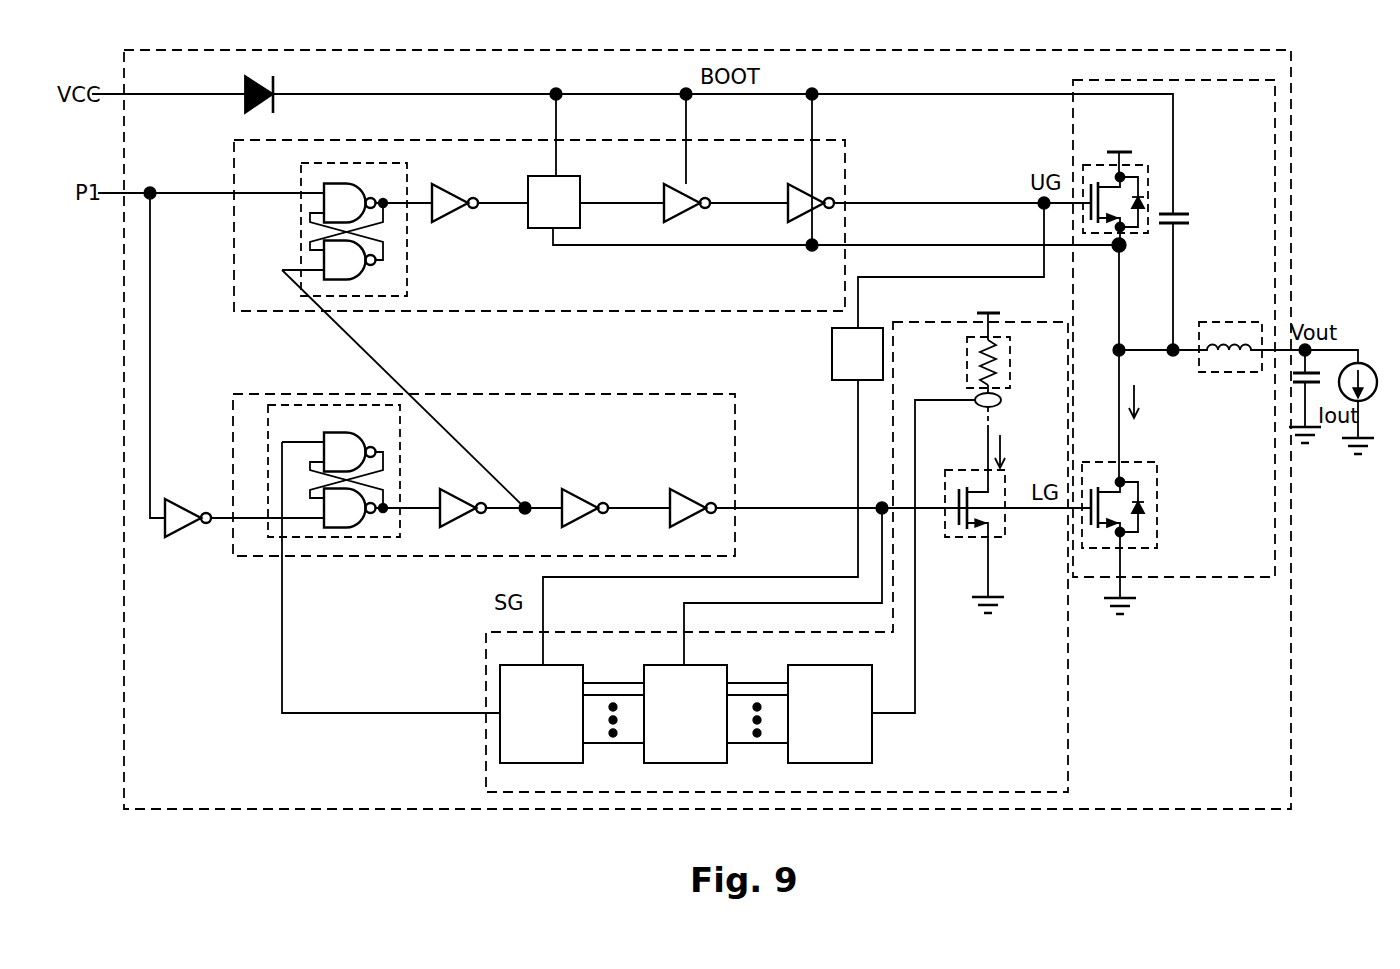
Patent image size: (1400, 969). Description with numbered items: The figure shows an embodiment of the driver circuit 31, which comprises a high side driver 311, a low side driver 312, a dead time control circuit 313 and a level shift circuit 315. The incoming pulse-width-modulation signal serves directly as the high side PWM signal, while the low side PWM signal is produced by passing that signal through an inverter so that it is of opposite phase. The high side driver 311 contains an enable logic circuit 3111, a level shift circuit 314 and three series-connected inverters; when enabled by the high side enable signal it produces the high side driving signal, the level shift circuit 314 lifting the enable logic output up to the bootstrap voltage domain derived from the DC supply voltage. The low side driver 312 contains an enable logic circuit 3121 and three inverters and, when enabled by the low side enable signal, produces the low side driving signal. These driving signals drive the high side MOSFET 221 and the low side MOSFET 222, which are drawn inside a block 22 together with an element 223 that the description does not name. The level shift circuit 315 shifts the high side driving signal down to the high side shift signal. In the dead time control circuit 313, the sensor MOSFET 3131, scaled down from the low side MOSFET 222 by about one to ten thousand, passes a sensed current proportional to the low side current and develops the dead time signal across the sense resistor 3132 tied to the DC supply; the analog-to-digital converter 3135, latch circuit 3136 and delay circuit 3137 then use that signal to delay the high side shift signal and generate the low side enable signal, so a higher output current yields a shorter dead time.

The driver circuit 31 is at (167, 799).
The high side driver 311 is at (837, 300).
The enable logic circuit 3111 is at (302, 205).
The low side driver 312 is at (690, 434).
The enable logic circuit 3121 is at (402, 420).
The dead time control circuit 313 is at (1050, 780).
The sensor MOSFET 3131 is at (1005, 518).
The sense resistor 3132 is at (967, 347).
The analog-to-digital converter 3135 is at (856, 729).
The latch circuit 3136 is at (712, 729).
The delay circuit 3137 is at (568, 729).
The level shift circuit 314 is at (574, 218).
The level shift circuit 315 is at (877, 369).
The power stage 22 is at (1249, 559).
The high side MOSFET 221 is at (1135, 163).
The low side MOSFET 222 is at (1128, 460).
The inductor 223 is at (1203, 323).